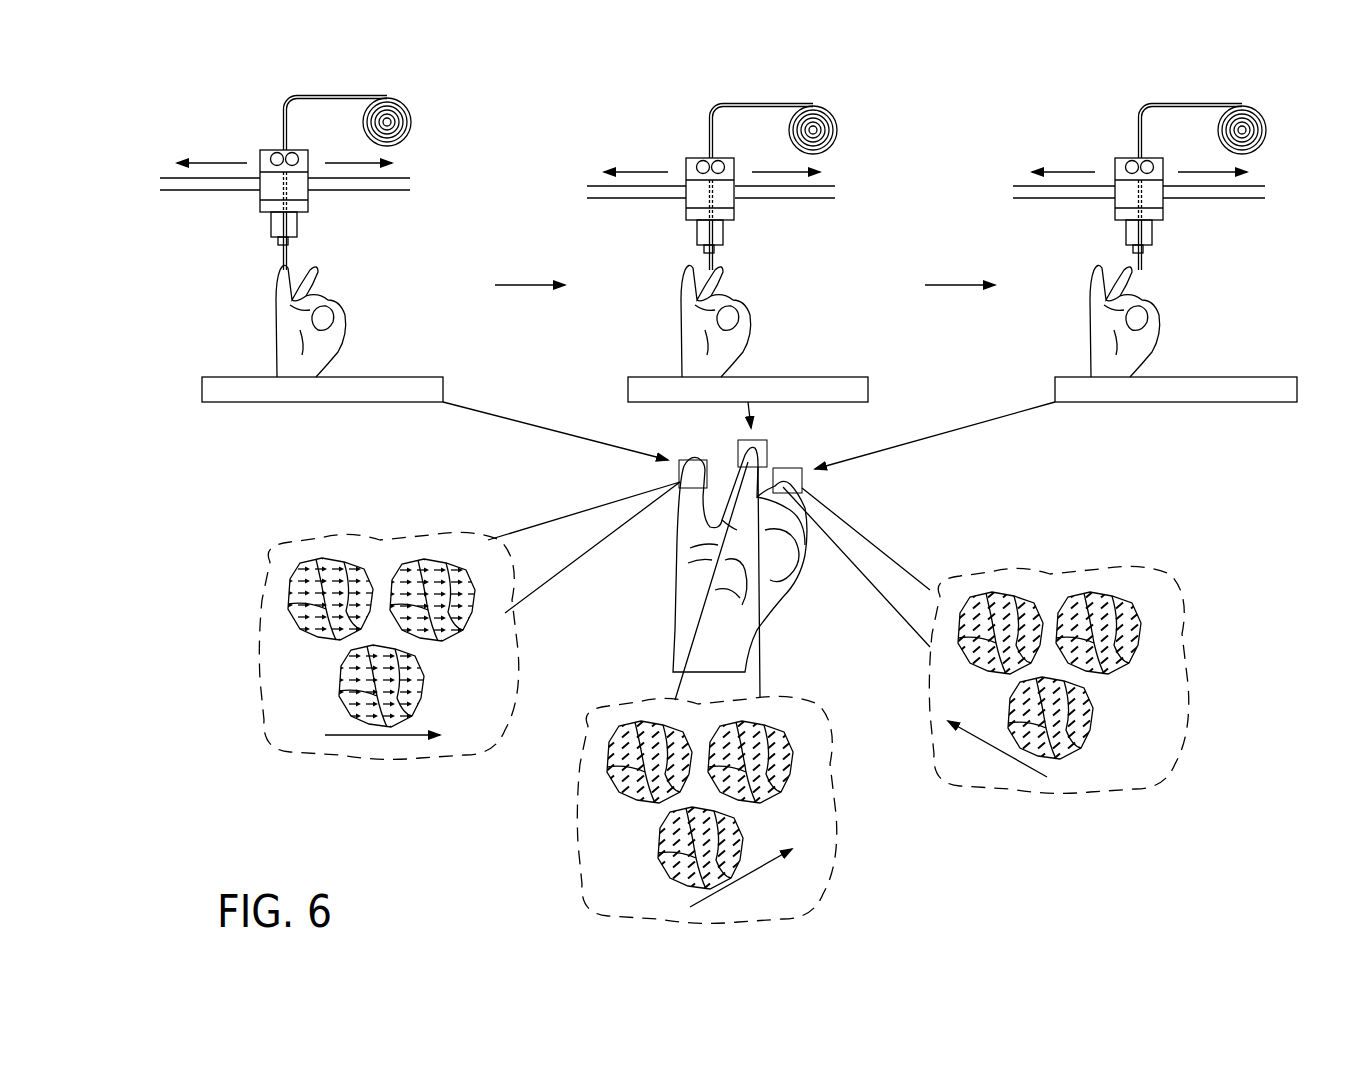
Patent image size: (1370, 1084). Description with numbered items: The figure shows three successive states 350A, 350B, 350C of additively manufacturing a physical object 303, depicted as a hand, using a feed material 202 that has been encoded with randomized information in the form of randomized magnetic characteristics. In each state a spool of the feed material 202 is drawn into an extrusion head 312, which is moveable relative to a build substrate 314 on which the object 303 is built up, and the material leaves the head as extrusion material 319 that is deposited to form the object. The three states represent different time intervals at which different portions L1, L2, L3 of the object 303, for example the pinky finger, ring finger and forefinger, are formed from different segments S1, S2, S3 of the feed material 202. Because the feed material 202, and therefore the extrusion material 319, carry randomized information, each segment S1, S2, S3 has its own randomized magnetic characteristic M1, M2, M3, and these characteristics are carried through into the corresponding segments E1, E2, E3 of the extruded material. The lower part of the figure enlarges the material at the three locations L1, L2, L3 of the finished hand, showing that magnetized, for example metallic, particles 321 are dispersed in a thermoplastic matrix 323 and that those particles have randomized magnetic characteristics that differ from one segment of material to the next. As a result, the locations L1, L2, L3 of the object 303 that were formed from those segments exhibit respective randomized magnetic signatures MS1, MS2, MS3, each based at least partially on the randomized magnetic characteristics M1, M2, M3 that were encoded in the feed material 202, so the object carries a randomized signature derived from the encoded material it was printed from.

The feed material 202 is at (337, 82).
The extrusion head 312 is at (308, 196).
The extrusion material 319 is at (304, 240).
The physical object 303 is at (353, 288).
The build substrate 314 is at (400, 376).
The first state 350A is at (422, 147).
The second state 350B is at (850, 155).
The third state 350C is at (1279, 155).
The magnetized particles 321 is at (380, 647).
The thermoplastic matrix 323 is at (432, 547).
The first portion of the object L1 is at (767, 452).
The second portion of the object L2 is at (802, 486).
The third portion of the object L3 is at (692, 460).
The first randomized magnetic signature MS1 is at (747, 877).
The second randomized magnetic signature MS2 is at (990, 750).
The third randomized magnetic signature MS3 is at (387, 738).
The first randomized magnetic characteristic M1 is at (691, 143).
The second randomized magnetic characteristic M2 is at (1157, 145).
The third randomized magnetic characteristic M3 is at (303, 115).
The first segment of the feed material S1 is at (708, 127).
The second segment of the feed material S2 is at (1137, 144).
The third segment of the feed material S3 is at (284, 128).
The first segment of the extrusion material E1 is at (708, 266).
The second segment of the extrusion material E2 is at (1138, 283).
The third segment of the extrusion material E3 is at (283, 270).